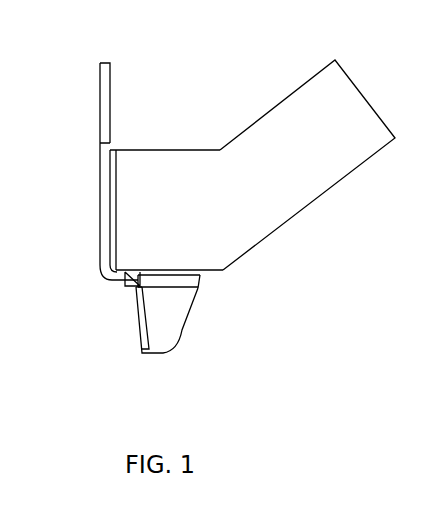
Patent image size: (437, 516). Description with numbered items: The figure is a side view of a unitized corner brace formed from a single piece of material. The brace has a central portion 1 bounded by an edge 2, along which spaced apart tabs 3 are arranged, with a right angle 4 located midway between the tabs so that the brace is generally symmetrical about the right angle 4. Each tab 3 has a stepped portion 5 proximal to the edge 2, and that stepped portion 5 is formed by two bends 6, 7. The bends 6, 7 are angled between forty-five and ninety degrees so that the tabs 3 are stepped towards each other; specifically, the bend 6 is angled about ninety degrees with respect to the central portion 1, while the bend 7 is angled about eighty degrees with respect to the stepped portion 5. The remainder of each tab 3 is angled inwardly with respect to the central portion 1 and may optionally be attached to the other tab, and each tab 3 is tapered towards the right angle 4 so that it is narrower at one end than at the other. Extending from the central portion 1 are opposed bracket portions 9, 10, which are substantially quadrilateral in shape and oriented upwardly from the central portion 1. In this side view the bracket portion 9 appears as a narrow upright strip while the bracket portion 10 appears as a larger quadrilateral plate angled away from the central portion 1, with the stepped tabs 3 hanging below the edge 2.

The central portion 1 is at (173, 180).
The edge 2 is at (222, 272).
The tabs 3 is at (135, 337).
The right angle 4 is at (116, 182).
The stepped portion 5 is at (123, 288).
The bend 6 is at (103, 280).
The bend 7 is at (133, 290).
The bracket portion 9 is at (105, 110).
The bracket portion 10 is at (302, 125).